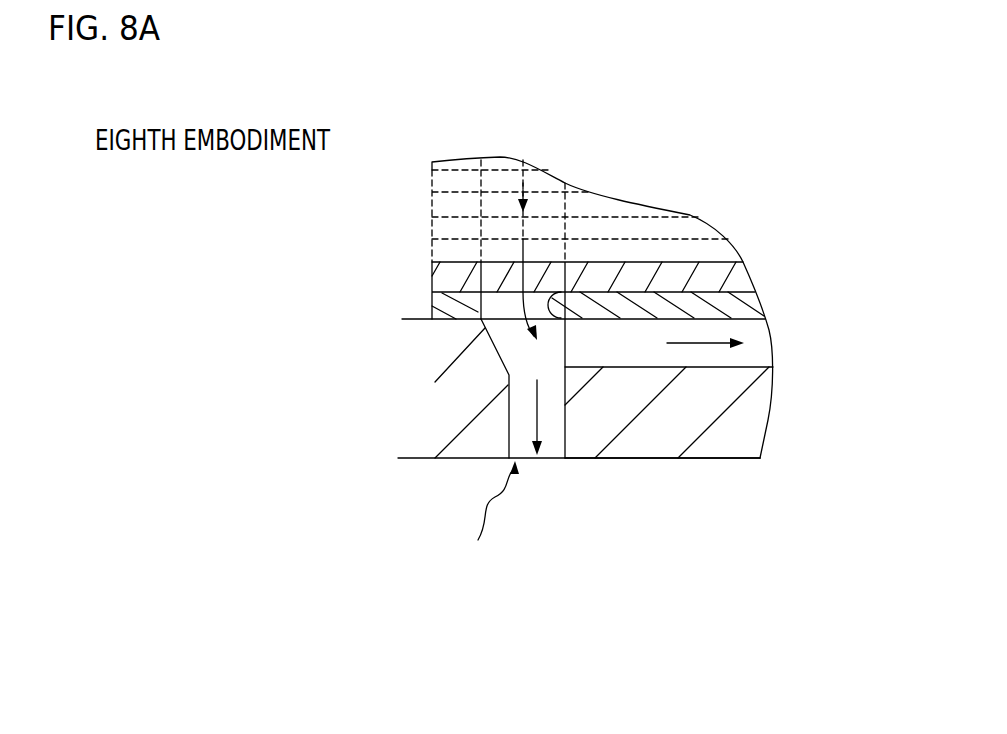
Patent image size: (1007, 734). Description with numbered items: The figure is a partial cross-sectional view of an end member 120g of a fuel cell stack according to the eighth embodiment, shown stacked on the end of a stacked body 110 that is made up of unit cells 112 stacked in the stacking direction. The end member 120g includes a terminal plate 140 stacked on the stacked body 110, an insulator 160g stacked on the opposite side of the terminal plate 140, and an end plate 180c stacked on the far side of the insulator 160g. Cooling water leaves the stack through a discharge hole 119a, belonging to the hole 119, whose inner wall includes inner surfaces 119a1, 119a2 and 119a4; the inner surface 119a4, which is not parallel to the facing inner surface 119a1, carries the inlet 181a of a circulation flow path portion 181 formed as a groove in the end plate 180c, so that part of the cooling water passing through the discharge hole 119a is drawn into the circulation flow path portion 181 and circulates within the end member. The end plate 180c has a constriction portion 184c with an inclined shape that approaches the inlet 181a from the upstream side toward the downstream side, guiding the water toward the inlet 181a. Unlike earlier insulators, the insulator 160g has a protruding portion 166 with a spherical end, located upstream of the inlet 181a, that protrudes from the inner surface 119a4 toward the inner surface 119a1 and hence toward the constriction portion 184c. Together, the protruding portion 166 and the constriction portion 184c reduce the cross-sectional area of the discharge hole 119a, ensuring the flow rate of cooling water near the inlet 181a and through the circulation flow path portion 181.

The stacked body 110 is at (613, 184).
The flow path region 119 is at (488, 175).
The unit cell 112 is at (638, 252).
The terminal plate 140 is at (452, 280).
The insulator 160g is at (457, 307).
The end plate 180c is at (432, 349).
The constriction portion 184c is at (440, 372).
The end member 120g is at (323, 258).
The circulation flow path portion 181 is at (742, 306).
The inlet 181a is at (566, 342).
The protruding portion 166 is at (585, 318).
The inner surface 119a1 is at (510, 437).
The discharge hole 119a is at (483, 517).
The inner surface 119a2 is at (528, 350).
The inner surface 119a4 is at (573, 459).